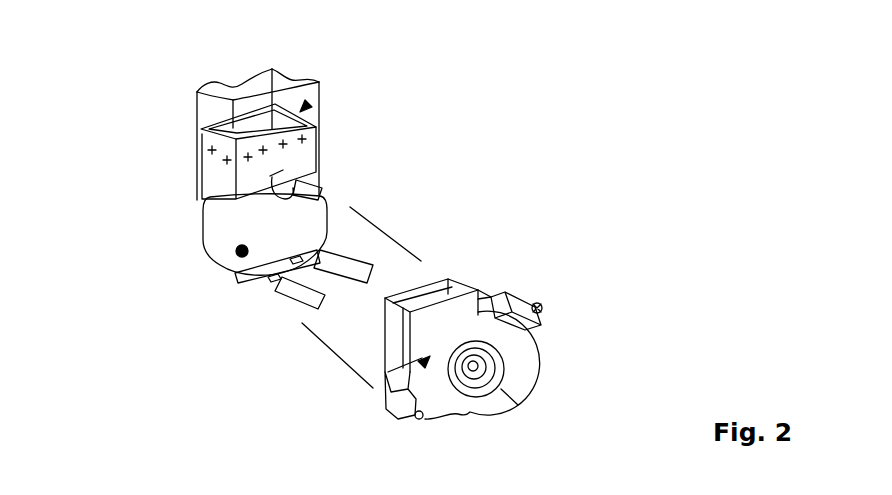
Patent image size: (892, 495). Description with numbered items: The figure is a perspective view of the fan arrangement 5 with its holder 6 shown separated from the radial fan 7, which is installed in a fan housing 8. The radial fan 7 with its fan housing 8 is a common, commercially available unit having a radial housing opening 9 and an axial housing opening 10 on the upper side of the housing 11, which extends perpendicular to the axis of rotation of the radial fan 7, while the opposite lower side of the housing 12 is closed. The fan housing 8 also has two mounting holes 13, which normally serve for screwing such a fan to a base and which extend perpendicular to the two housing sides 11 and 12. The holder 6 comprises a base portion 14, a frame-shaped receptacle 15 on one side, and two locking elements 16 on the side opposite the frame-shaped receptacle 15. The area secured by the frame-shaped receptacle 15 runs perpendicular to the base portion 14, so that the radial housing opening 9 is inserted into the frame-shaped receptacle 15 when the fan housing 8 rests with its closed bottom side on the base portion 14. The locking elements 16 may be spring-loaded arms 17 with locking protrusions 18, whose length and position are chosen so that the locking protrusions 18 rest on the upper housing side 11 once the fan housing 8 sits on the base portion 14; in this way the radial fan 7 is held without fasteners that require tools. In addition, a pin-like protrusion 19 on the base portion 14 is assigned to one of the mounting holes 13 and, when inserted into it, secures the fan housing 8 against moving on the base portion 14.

The fan arrangement 5 is at (452, 165).
The holder 6 is at (203, 243).
The radial fan 7 is at (530, 416).
The fan housing 8 is at (486, 310).
The radial housing opening 9 is at (472, 267).
The axial housing opening 10 is at (465, 420).
The upper side of the housing 11 is at (376, 382).
The lower side of the housing 12 is at (430, 273).
The mounting holes 13 is at (538, 304).
The base portion 14 is at (221, 217).
The frame-shaped receptacle 15 is at (323, 88).
The locking elements 16 is at (374, 242).
The spring-loaded arms 17 is at (233, 283).
The locking protrusions 18 is at (341, 236).
The pin-like protrusion 19 is at (237, 251).